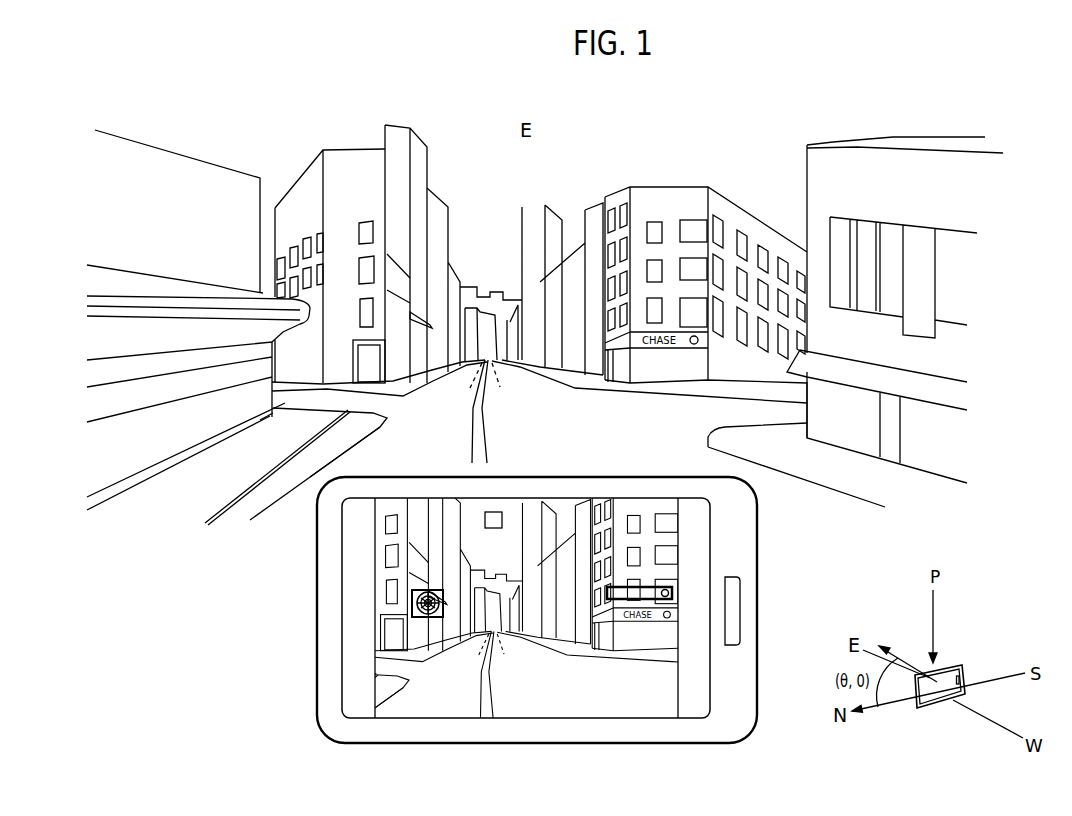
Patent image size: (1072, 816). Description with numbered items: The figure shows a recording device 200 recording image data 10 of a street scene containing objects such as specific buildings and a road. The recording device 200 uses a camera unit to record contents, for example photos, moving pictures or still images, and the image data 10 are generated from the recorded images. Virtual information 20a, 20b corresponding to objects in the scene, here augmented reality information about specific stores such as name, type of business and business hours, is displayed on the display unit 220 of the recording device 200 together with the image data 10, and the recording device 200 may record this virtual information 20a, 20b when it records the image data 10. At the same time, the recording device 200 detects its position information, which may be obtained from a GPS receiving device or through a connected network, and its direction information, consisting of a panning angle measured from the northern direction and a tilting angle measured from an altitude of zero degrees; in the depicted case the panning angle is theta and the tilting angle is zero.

The image data 10 is at (435, 703).
The recording device 200 is at (532, 743).
The display unit 220 is at (613, 718).
The virtual information 20a is at (390, 599).
The virtual information 20b is at (650, 585).